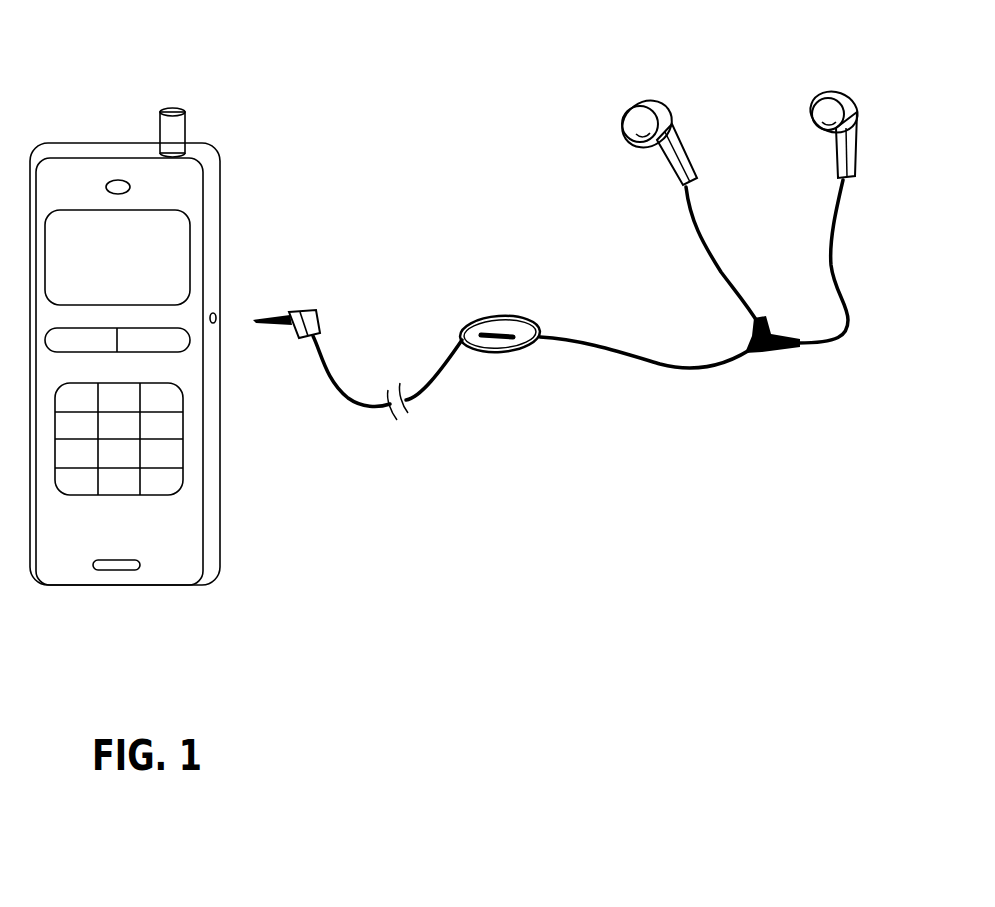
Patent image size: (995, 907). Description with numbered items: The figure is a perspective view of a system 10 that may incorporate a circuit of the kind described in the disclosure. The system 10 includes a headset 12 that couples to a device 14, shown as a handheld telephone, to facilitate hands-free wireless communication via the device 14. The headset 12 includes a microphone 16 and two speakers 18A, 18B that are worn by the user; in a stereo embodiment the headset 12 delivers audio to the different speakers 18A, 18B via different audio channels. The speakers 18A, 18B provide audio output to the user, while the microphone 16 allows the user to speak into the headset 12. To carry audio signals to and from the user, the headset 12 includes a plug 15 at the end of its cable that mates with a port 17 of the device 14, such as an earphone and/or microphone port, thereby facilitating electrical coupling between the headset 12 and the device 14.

The system 10 is at (426, 138).
The headset 12 is at (558, 296).
The device 14 is at (213, 523).
The plug 15 is at (273, 320).
The microphone 16 is at (517, 343).
The port 17 is at (215, 316).
The speaker 18A is at (813, 107).
The speaker 18B is at (662, 105).